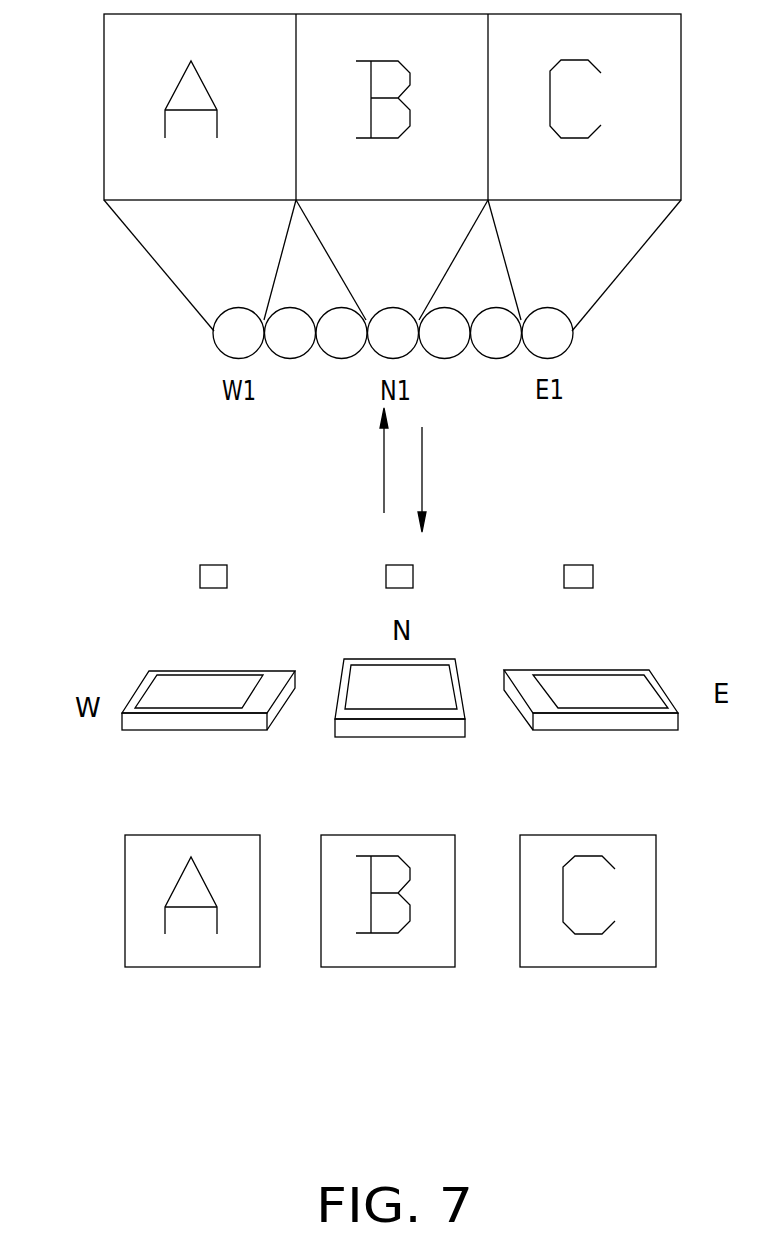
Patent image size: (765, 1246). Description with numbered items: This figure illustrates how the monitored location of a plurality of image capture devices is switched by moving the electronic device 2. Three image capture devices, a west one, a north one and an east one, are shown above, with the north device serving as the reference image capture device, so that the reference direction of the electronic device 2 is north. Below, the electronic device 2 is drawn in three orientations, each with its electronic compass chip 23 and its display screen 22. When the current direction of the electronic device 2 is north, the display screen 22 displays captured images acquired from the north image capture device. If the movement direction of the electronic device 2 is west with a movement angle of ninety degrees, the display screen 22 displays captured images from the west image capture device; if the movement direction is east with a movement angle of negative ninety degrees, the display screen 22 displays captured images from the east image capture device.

The electronic device 2 is at (150, 672).
The display screen 22 is at (203, 688).
The electronic compass chip 23 is at (213, 575).